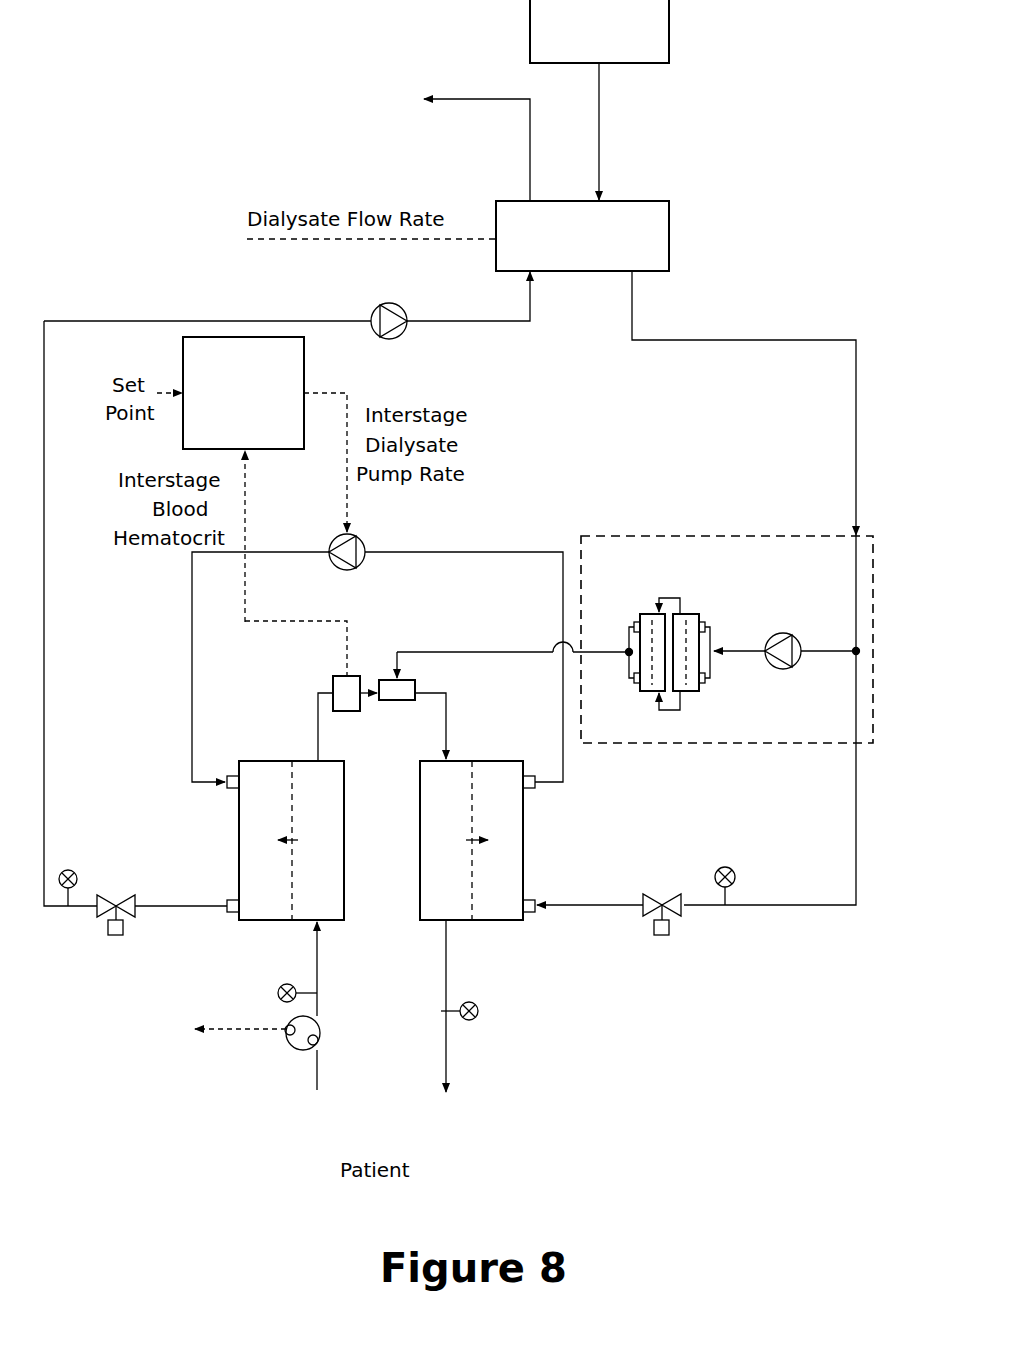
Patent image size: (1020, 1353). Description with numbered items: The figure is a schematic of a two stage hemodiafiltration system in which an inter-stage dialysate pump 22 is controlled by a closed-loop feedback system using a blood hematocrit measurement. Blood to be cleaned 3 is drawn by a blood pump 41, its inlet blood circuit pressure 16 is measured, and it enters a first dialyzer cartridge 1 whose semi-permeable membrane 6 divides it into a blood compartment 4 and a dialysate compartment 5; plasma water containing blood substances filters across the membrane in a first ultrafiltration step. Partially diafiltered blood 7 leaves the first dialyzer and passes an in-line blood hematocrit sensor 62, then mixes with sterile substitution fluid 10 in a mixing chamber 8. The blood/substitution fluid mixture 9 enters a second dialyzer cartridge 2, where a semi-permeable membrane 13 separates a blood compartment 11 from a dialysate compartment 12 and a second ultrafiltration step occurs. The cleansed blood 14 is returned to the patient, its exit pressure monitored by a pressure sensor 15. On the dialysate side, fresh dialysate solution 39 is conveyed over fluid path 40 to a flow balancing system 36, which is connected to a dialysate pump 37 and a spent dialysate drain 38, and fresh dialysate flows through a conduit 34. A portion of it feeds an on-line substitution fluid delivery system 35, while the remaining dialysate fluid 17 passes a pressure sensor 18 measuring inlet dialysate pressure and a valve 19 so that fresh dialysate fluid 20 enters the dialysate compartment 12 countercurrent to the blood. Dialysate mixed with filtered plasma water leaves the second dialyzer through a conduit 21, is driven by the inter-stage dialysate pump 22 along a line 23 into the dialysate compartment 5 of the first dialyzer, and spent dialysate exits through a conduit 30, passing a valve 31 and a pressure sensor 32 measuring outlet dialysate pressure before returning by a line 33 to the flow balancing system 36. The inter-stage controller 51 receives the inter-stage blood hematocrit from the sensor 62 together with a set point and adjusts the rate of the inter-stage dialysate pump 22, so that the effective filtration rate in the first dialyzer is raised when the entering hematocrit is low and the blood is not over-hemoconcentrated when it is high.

The first dialyzer cartridge 1 is at (239, 840).
The second dialyzer cartridge 2 is at (523, 838).
The blood to be cleaned 3 is at (318, 962).
The blood compartment 4 is at (319, 876).
The dialysate compartment 5 is at (271, 876).
The semi-permeable membrane 6 is at (287, 800).
The partially diafiltered blood 7 is at (318, 727).
The mixing chamber 8 is at (405, 701).
The blood/substitution fluid mixture 9 is at (446, 718).
The sterile substitution fluid 10 is at (510, 653).
The blood compartment 11 is at (448, 893).
The dialysate compartment 12 is at (498, 893).
The semi-permeable membrane 13 is at (472, 795).
The cleansed blood 14 is at (446, 960).
The pressure sensor 15 is at (469, 1021).
The inlet blood circuit pressure 16 is at (284, 984).
The remaining dialysate fluid 17 is at (856, 820).
The pressure sensor 18 is at (735, 876).
The dialysate inlet valve 19 is at (680, 882).
The fresh dialysate fluid 20 is at (595, 906).
The conduit 21 is at (563, 735).
The inter-stage dialysate pump 22 is at (365, 553).
The interstage dialysate line to first dialyzer 23 is at (192, 621).
The conduit 30 is at (203, 900).
The dialysate outlet valve 31 is at (128, 893).
The pressure sensor 32 is at (72, 869).
The spent dialysate line 33 is at (44, 675).
The conduit 34 is at (856, 450).
The on-line substitution fluid delivery system 35 is at (622, 536).
The flow balancing system 36 is at (669, 224).
The dialysate pump 37 is at (405, 314).
The spent dialysate drain line 38 is at (530, 128).
The fresh dialysate solution 39 is at (669, 6).
The fluid path 40 is at (605, 136).
The blood pump 41 is at (289, 1021).
The inter-stage controller 51 is at (268, 450).
The blood hematocrit sensor 62 is at (347, 712).